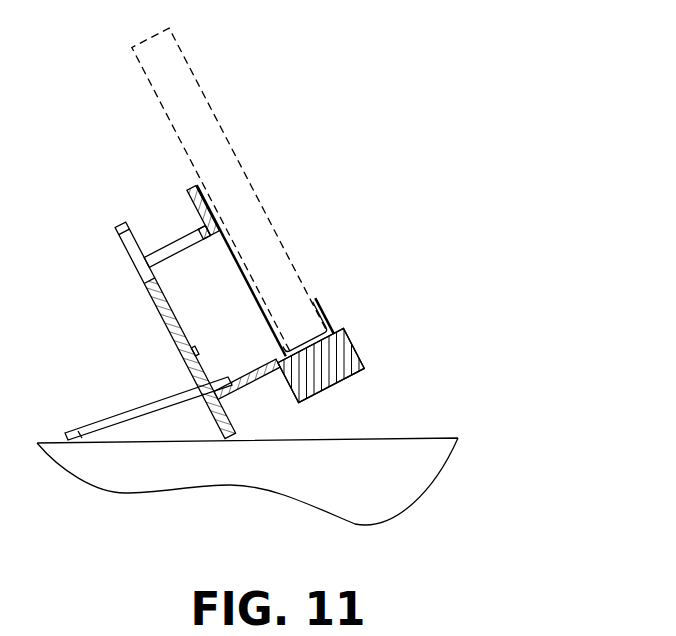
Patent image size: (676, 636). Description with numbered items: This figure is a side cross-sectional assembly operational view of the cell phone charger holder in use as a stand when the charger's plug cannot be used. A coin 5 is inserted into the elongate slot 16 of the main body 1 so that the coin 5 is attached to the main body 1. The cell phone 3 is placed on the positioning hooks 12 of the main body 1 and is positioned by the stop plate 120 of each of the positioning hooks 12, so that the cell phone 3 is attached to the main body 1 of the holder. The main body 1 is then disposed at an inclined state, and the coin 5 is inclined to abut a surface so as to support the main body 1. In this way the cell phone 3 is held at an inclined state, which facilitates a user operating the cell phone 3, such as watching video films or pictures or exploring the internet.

The main body 1 is at (378, 352).
The cell phone 3 is at (247, 197).
The coin 5 is at (92, 432).
The positioning hook 12 is at (339, 386).
The elongate slot 16 is at (200, 380).
The stop plate 120 is at (333, 334).